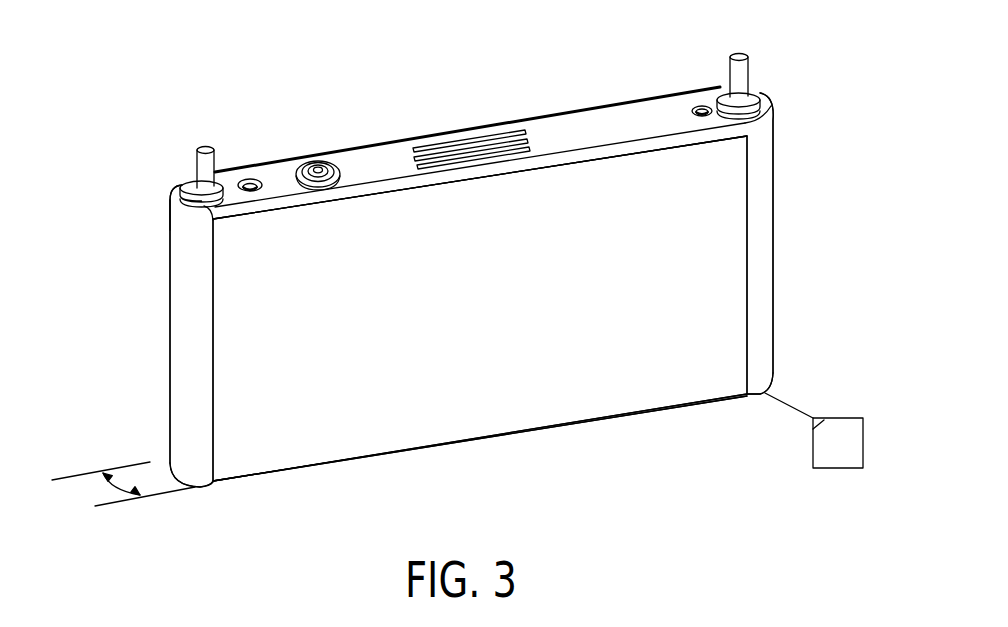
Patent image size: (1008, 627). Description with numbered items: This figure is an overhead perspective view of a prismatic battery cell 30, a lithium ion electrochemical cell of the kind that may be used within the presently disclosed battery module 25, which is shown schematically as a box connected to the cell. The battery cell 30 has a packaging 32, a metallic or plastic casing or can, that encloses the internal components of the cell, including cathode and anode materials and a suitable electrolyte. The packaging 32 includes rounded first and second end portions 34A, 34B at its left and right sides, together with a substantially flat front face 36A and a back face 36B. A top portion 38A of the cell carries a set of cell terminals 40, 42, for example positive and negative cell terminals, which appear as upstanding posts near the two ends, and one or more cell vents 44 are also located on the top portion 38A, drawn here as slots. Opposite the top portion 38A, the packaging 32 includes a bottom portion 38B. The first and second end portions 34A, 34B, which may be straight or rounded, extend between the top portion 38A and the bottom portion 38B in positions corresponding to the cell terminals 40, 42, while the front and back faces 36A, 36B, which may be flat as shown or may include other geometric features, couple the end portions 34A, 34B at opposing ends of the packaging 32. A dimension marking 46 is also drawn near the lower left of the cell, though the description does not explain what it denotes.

The battery module 25 is at (835, 442).
The battery cell 30 is at (358, 72).
The packaging 32 is at (235, 468).
The first end portion 34A is at (185, 335).
The second end portion 34B is at (772, 250).
The front face 36A is at (507, 315).
The back face 36B is at (145, 205).
The top portion 38A is at (552, 125).
The bottom portion 38B is at (469, 452).
The cell terminal 40 is at (208, 147).
The cell terminal 42 is at (739, 56).
The cell vent 44 is at (431, 134).
The angle 46 is at (127, 478).